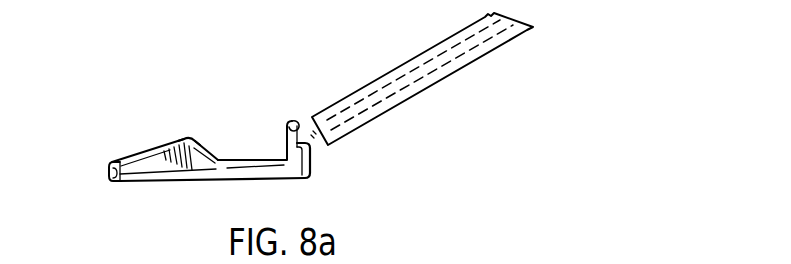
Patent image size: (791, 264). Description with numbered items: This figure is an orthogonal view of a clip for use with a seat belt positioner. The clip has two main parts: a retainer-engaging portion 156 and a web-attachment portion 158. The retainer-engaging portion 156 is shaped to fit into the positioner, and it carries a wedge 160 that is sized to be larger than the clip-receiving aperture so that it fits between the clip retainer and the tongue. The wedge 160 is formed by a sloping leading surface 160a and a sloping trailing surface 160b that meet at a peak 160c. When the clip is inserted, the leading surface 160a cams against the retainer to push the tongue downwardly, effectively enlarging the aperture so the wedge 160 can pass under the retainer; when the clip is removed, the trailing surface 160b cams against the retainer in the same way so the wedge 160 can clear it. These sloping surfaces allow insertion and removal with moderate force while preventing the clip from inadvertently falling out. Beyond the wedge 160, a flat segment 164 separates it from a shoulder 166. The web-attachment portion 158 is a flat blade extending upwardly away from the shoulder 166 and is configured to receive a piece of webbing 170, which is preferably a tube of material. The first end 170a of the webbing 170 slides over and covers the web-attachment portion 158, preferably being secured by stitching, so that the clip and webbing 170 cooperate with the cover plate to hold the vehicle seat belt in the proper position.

The retainer-engaging portion 156 is at (178, 183).
The web-attachment portion 158 is at (348, 127).
The wedge 160 is at (137, 153).
The sloping leading surface 160a is at (120, 162).
The sloping trailing surface 160b is at (208, 158).
The peak 160c is at (190, 138).
The flat segment 164 is at (255, 160).
The shoulder 166 is at (293, 129).
The webbing 170 is at (462, 67).
The first end of webbing 170a is at (378, 83).